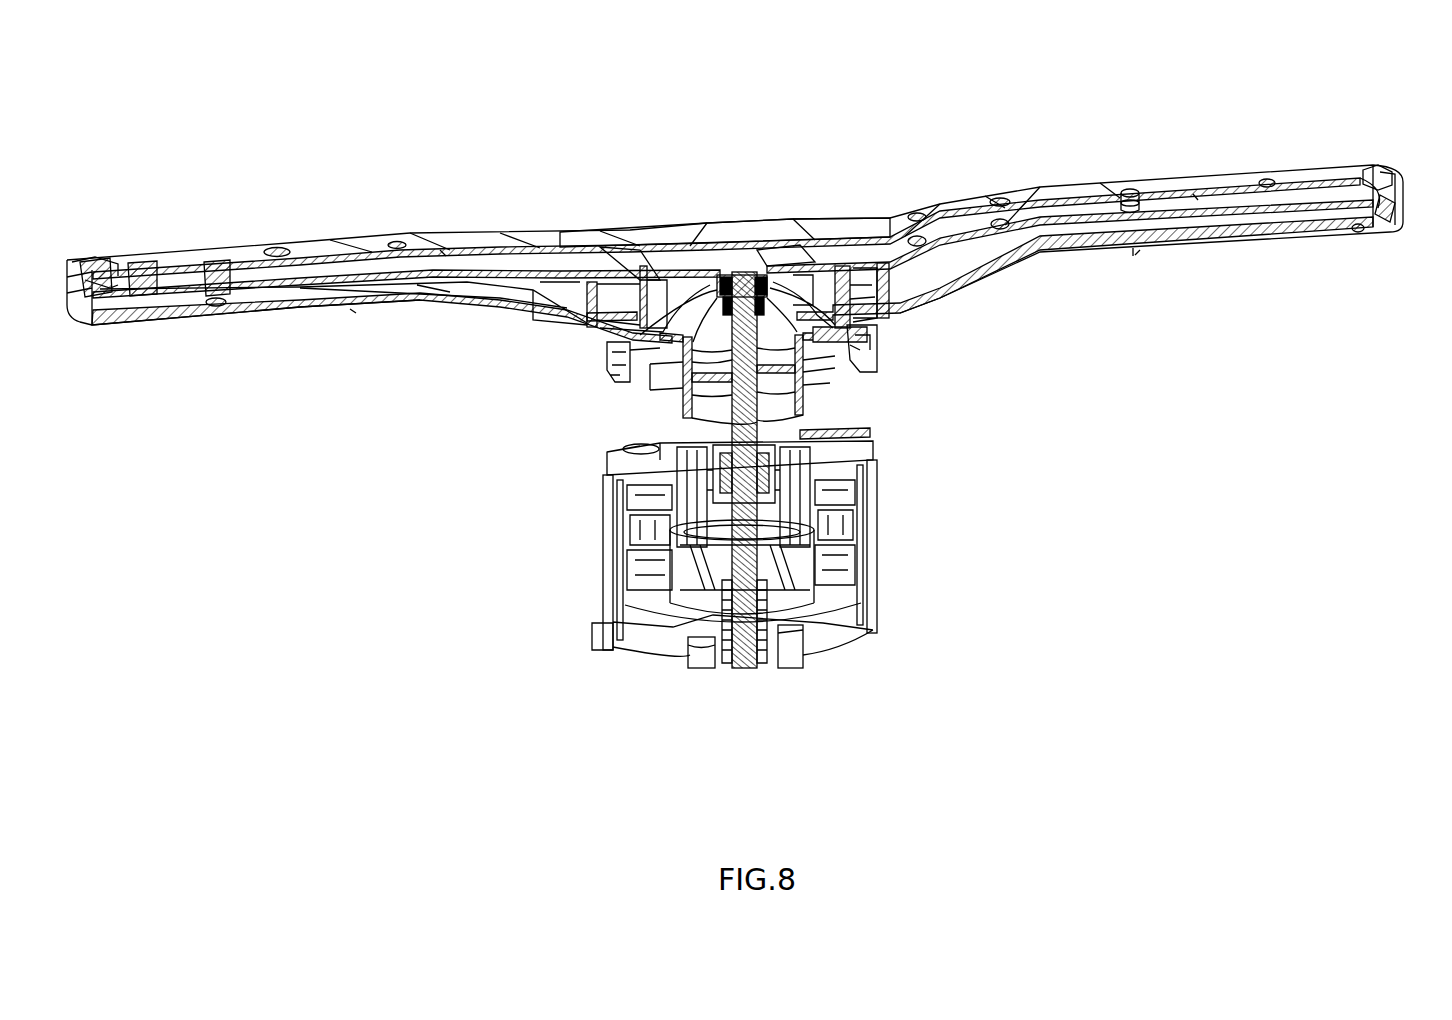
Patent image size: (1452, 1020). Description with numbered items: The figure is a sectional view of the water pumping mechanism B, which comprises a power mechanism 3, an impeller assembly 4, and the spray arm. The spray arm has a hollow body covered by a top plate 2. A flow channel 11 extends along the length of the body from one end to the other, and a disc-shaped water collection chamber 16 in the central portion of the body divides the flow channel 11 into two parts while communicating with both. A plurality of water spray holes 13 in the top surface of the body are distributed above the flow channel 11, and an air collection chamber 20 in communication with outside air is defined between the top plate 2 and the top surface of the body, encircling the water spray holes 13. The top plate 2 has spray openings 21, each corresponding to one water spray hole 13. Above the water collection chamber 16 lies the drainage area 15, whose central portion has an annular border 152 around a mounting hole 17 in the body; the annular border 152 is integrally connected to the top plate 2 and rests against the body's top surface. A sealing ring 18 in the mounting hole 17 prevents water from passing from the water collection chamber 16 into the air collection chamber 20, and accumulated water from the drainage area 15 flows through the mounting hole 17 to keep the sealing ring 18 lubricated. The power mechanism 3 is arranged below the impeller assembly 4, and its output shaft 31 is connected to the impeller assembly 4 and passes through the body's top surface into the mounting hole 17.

The top plate 2 is at (725, 232).
The flow channel 11 is at (353, 312).
The water spray holes 13 is at (217, 305).
The drainage area 15 is at (690, 263).
The annular border 152 is at (653, 273).
The water collection chamber 16 is at (832, 292).
The mounting hole 17 is at (762, 260).
The sealing ring 18 is at (800, 275).
The air collection chamber 20 is at (441, 252).
The spray openings 21 is at (217, 273).
The power mechanism 3 is at (860, 589).
The output shaft 31 is at (684, 407).
The impeller assembly 4 is at (807, 375).
The water pumping mechanism B is at (1007, 442).